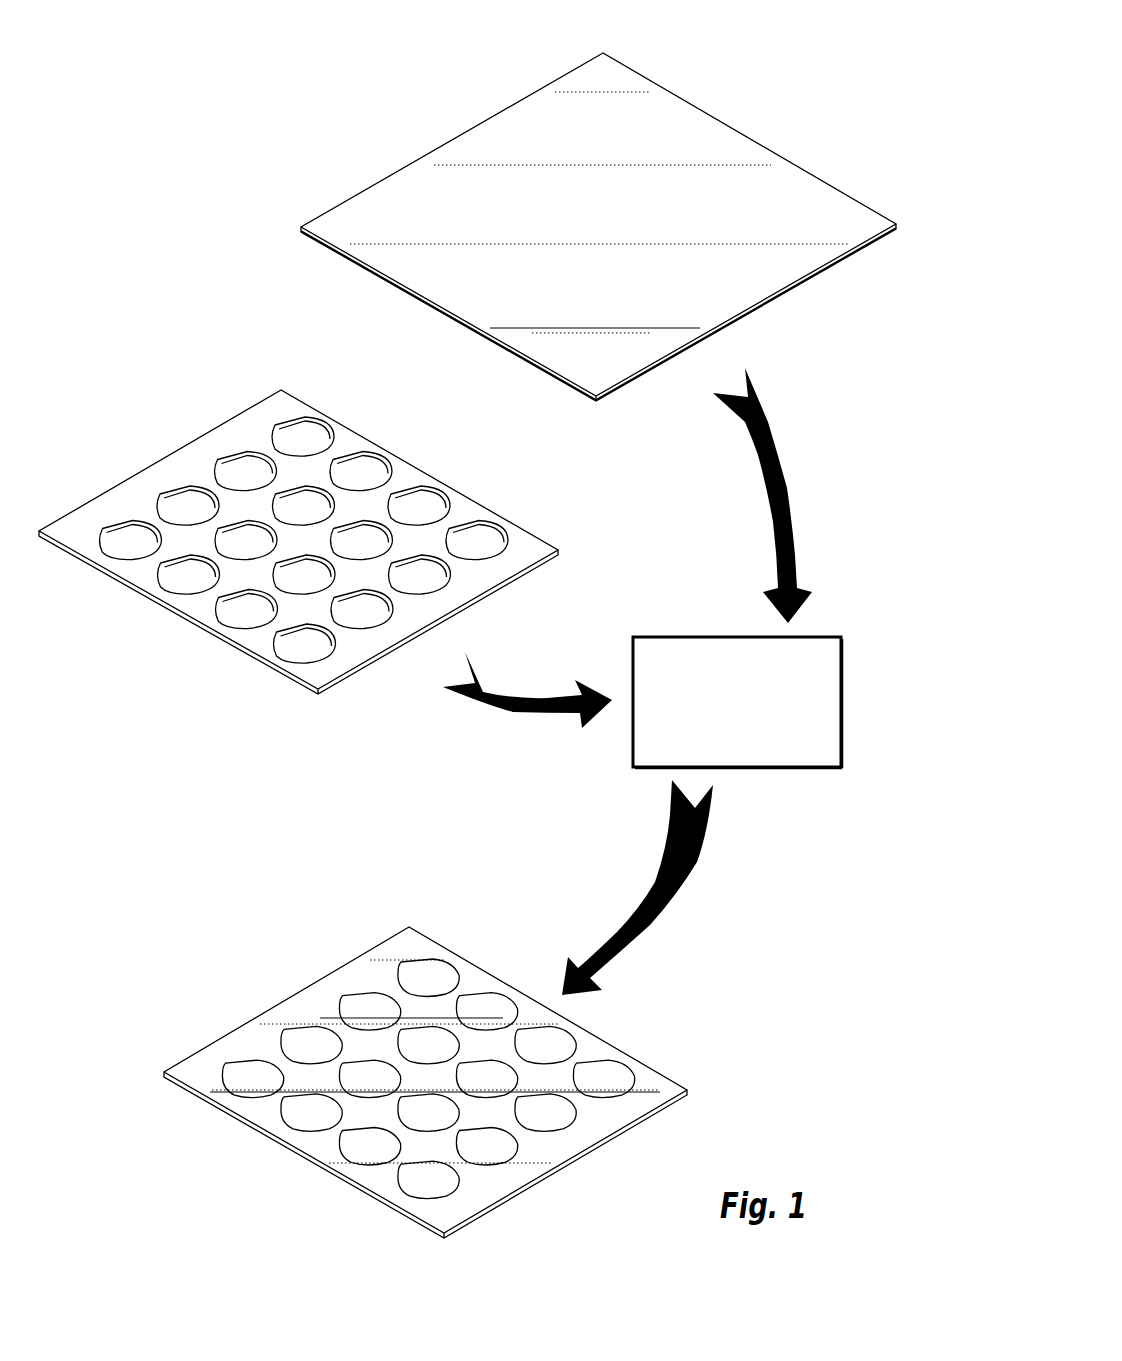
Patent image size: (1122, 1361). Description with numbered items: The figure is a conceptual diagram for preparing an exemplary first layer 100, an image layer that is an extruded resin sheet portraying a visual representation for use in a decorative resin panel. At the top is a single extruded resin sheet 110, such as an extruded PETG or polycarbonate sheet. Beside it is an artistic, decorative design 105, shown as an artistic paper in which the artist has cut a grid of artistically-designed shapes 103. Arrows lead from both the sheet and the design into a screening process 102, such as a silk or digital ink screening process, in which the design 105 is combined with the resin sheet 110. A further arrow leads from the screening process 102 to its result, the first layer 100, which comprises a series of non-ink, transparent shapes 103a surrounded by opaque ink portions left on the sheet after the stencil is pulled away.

The extruded resin sheet 110 is at (667, 117).
The decorative design 105 is at (262, 430).
The artistically-designed shapes 103 is at (168, 500).
The screening process 102 is at (755, 740).
The first layer 100 is at (465, 977).
The non-ink shapes 103a is at (618, 1076).